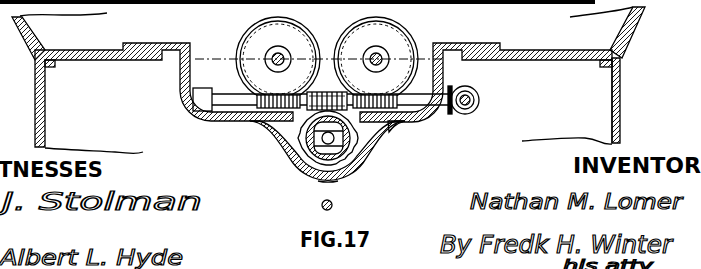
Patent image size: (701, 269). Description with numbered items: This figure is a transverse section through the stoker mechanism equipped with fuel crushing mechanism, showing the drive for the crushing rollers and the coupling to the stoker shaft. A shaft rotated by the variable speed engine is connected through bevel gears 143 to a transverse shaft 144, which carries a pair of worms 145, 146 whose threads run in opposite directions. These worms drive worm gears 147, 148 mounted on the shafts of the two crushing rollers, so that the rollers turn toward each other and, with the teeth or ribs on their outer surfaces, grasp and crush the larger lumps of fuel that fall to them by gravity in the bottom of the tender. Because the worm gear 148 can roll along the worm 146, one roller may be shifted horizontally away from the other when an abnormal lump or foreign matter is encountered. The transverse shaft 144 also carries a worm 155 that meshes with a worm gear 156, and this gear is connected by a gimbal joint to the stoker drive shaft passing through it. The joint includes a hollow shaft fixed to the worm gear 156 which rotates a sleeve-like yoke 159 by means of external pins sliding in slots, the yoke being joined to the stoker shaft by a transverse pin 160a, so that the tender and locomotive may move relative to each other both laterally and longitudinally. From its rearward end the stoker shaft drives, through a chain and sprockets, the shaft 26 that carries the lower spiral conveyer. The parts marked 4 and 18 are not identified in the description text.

The tank wall 4 is at (33, 31).
The housing plate with bores 18 is at (168, 60).
The worm gear 148 is at (293, 46).
The worm gear 147 is at (397, 44).
The worm 155 is at (327, 91).
The worm 146 is at (252, 127).
The transverse shaft 144 is at (413, 104).
The worm gear 156 is at (359, 161).
The sleeve-like yoke 159 is at (296, 157).
The worm 145 is at (390, 129).
The transverse pin 160a is at (340, 182).
The shaft 26 is at (320, 205).
The bevel gears 143 is at (471, 112).